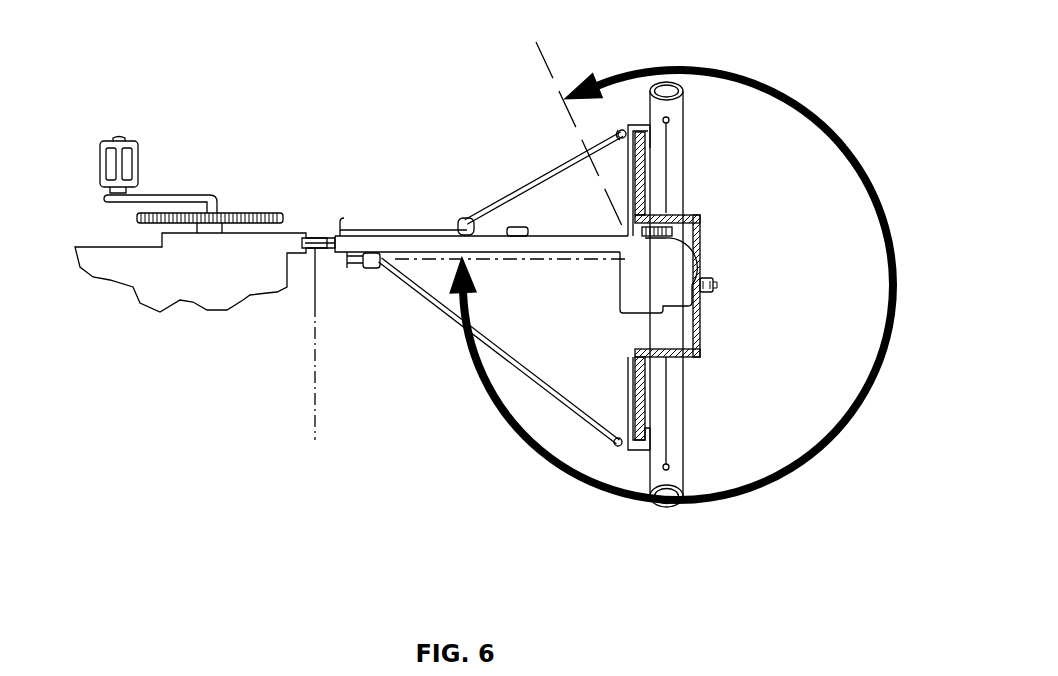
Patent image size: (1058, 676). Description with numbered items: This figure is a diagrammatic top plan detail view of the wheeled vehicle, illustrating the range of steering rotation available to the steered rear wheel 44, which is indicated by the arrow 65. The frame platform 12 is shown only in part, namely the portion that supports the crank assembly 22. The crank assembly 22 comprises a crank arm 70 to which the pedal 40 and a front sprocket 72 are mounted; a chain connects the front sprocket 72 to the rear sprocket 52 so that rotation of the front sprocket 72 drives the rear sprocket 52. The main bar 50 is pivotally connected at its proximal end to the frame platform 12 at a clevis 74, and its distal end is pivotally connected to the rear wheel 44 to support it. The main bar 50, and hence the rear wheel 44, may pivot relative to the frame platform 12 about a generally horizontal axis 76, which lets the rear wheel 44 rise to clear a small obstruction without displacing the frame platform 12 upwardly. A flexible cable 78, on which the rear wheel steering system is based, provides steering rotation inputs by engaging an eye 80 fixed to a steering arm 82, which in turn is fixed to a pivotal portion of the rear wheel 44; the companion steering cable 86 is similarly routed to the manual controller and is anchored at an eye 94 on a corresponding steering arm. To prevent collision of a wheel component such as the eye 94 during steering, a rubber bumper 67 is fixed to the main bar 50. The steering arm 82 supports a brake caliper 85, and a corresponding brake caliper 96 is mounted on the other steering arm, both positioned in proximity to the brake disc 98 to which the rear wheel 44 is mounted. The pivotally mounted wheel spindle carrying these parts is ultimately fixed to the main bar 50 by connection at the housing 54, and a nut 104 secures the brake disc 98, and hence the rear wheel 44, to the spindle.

The crank assembly 22 is at (238, 80).
The frame platform 12 is at (201, 272).
The pedal 40 is at (130, 140).
The crank arm 70 is at (158, 195).
The front sprocket 72 is at (260, 215).
The clevis 74 is at (320, 210).
The generally horizontal axis 76 is at (314, 354).
The main bar 50 is at (562, 236).
The rubber bumper 67 is at (517, 229).
The companion steering cable 86 is at (537, 180).
The flexible cable 78 is at (497, 347).
The eye 80 is at (605, 450).
The brake caliper 85 is at (630, 460).
The steering arm 82 is at (627, 383).
The eye 94 is at (628, 123).
The brake caliper 96 is at (642, 125).
The brake disc 98 is at (646, 170).
The rear sprocket 52 is at (700, 222).
The housing 54 is at (658, 275).
The nut 104 is at (716, 285).
The rear wheel 44 is at (700, 457).
The arrow 65 is at (888, 217).